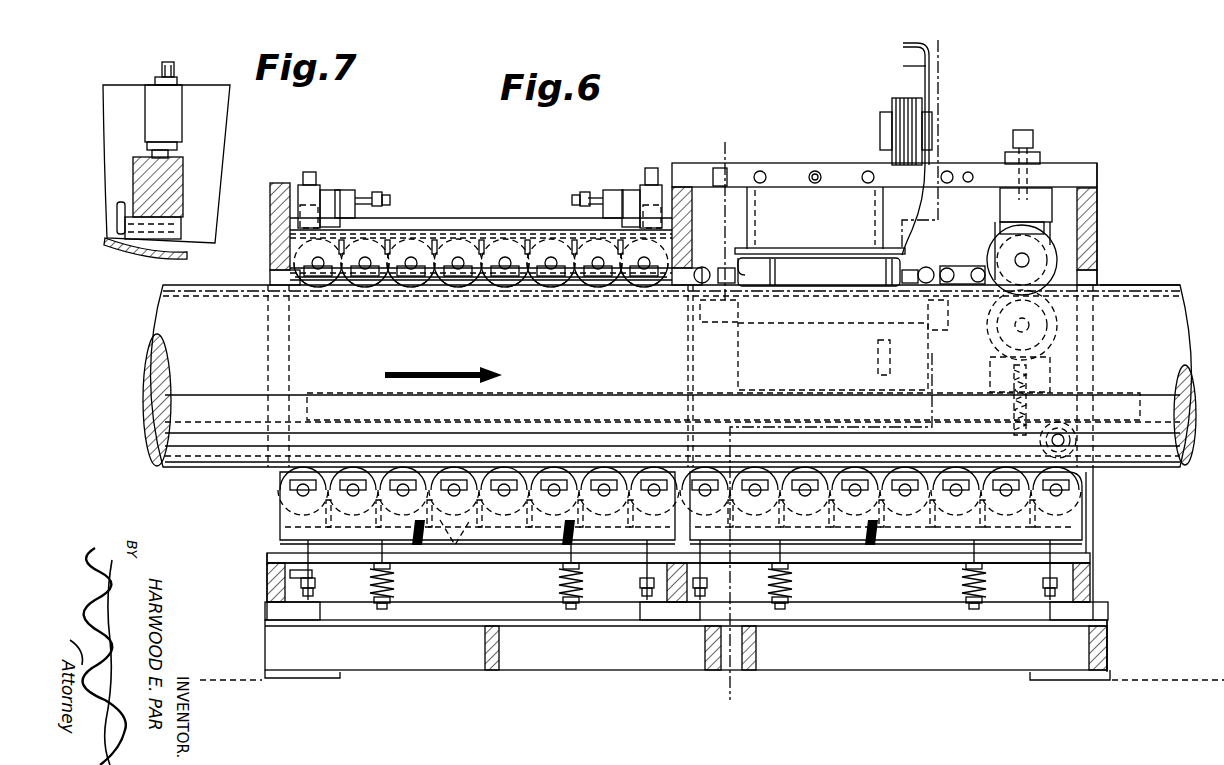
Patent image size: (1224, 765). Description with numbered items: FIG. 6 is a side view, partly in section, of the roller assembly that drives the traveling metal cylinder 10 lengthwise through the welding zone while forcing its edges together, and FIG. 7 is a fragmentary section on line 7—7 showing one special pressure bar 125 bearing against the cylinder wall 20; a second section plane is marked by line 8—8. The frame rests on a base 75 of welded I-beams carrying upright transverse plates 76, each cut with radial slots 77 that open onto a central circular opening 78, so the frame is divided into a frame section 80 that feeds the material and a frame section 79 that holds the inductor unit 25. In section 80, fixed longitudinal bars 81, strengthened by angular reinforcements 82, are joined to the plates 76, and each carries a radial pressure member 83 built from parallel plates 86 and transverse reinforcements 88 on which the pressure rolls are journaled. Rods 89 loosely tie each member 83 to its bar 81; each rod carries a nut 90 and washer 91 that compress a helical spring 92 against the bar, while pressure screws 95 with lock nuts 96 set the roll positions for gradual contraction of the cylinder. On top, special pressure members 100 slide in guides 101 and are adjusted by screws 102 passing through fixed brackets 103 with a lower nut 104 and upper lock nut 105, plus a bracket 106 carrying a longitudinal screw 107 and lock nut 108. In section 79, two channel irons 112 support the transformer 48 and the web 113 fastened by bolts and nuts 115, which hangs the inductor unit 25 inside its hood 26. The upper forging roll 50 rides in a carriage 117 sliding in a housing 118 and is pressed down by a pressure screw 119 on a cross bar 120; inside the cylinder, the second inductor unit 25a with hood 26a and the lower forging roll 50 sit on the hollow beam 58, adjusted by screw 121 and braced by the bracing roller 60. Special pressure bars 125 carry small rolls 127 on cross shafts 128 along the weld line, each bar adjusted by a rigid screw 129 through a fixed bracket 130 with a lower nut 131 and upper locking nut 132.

In FIG. 6, the section line 7— 7 is at (720, 142).
In FIG. 6, the section line 8— 8 is at (900, 40).
In FIG. 6, the tube / pipe being processed 10 is at (195, 470).
In FIG. 7, the frame rail 20 is at (190, 240).
In FIG. 6, the frame rail 20 is at (1150, 285).
In FIG. 6, the inductor unit 25 is at (850, 280).
In FIG. 6, the second inductor unit 25a is at (730, 333).
In FIG. 6, the hood 26 is at (790, 262).
In FIG. 6, the hood 26a is at (790, 330).
In FIG. 6, the transformer 48 is at (888, 103).
In FIG. 6, the forging rolls 50 is at (1057, 255).
In FIG. 6, the hollow beam 58 is at (598, 393).
In FIG. 6, the bracing roller 60 is at (1040, 447).
In FIG. 6, the base 75 is at (1112, 650).
In FIG. 7, the transverse metal plates 76 is at (118, 85).
In FIG. 6, the transverse metal plates 76 is at (1099, 248).
In FIG. 6, the radial slots 77 is at (1093, 532).
In FIG. 6, the central circular opening 78 is at (1099, 278).
In FIG. 6, the frame section 79 is at (890, 590).
In FIG. 6, the frame section 80 is at (470, 625).
In FIG. 6, the longitudinal bars 81 is at (518, 565).
In FIG. 6, the angular reinforcement 82 is at (313, 575).
In FIG. 6, the radial pressure member 83 is at (573, 530).
In FIG. 6, the parallel plates 86 is at (508, 528).
In FIG. 6, the transverse reinforcements 88 is at (456, 560).
In FIG. 6, the rods 89 is at (385, 548).
In FIG. 6, the nut 90 is at (383, 609).
In FIG. 6, the washer 91 is at (388, 603).
In FIG. 6, the helical spring 92 is at (386, 585).
In FIG. 6, the pressure screws 95 is at (312, 598).
In FIG. 6, the lock nuts 96 is at (313, 585).
In FIG. 6, the special pressure members 100 is at (462, 218).
In FIG. 6, the guides 101 is at (305, 287).
In FIG. 6, the screw 102 is at (318, 178).
In FIG. 6, the fixed bracket 103 is at (333, 192).
In FIG. 6, the lower nut 104 is at (296, 222).
In FIG. 6, the upper nut 105 is at (306, 183).
In FIG. 6, the bracket 106 is at (348, 190).
In FIG. 6, the longitudinal screw 107 is at (388, 200).
In FIG. 6, the lock nut 108 is at (372, 196).
In FIG. 6, the channel irons 112 is at (843, 170).
In FIG. 6, the web 113 is at (800, 205).
In FIG. 6, the bolts and nuts 115 is at (817, 176).
In FIG. 6, the carriage 117 is at (1045, 232).
In FIG. 6, the housing 118 is at (1052, 200).
In FIG. 6, the pressure screw 119 is at (1033, 135).
In FIG. 6, the cross bar 120 is at (1042, 157).
In FIG. 6, the screw 121 is at (1012, 410).
In FIG. 7, the special pressure members 125 is at (178, 180).
In FIG. 7, the small diameter rolls 127 is at (117, 218).
In FIG. 7, the cross shaft 128 is at (152, 239).
In FIG. 7, the rigid screw 129 is at (170, 62).
In FIG. 7, the fixed bracket 130 is at (182, 108).
In FIG. 7, the lower nut 131 is at (178, 146).
In FIG. 7, the upper locking nut 132 is at (176, 78).